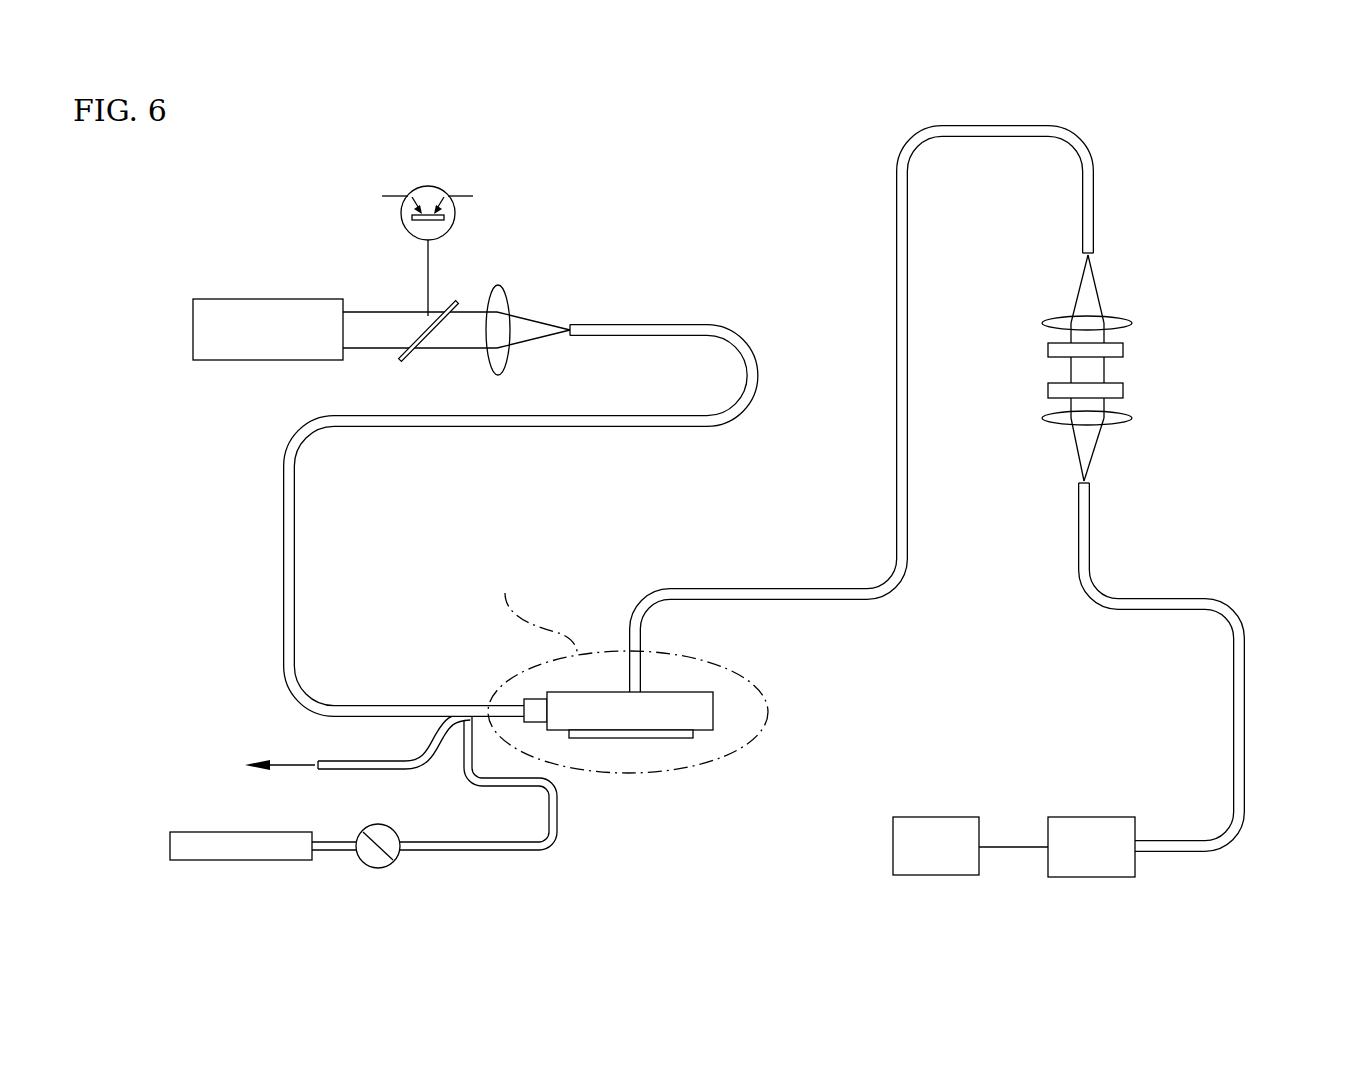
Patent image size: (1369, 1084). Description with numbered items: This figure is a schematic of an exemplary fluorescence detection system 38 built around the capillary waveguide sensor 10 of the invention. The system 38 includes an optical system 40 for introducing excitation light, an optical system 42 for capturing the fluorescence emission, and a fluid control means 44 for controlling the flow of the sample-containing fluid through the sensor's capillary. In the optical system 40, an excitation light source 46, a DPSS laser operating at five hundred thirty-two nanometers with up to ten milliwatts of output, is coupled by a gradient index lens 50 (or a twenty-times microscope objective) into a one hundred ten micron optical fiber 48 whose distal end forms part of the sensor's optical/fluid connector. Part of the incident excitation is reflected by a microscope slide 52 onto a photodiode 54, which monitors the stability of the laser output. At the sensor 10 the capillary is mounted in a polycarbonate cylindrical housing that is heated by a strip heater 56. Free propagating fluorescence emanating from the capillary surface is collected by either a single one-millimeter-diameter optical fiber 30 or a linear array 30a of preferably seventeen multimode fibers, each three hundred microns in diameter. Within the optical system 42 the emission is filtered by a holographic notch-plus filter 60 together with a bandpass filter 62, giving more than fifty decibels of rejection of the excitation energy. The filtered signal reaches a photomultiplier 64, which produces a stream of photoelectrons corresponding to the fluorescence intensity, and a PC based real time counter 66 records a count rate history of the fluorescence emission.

The capillary waveguide sensor 10 is at (684, 680).
The optical fiber 30 is at (864, 411).
The linear array of multimode fibers 30a is at (692, 593).
The fluorescence detection system 38 is at (160, 556).
The optical system 40 is at (190, 172).
The optical system 42 is at (1291, 890).
The fluid control means 44 is at (169, 808).
The excitation light source 46 is at (255, 299).
The optical fiber 48 is at (745, 330).
The gradient index lens 50 is at (498, 285).
The microscope slide 52 is at (412, 358).
The photodiode 54 is at (428, 187).
The strip heater 56 is at (676, 738).
The holographic notch-plus filter 60 is at (1123, 350).
The bandpass filter 62 is at (1123, 390).
The photomultiplier 64 is at (1085, 817).
The PC based real time counter 66 is at (938, 817).